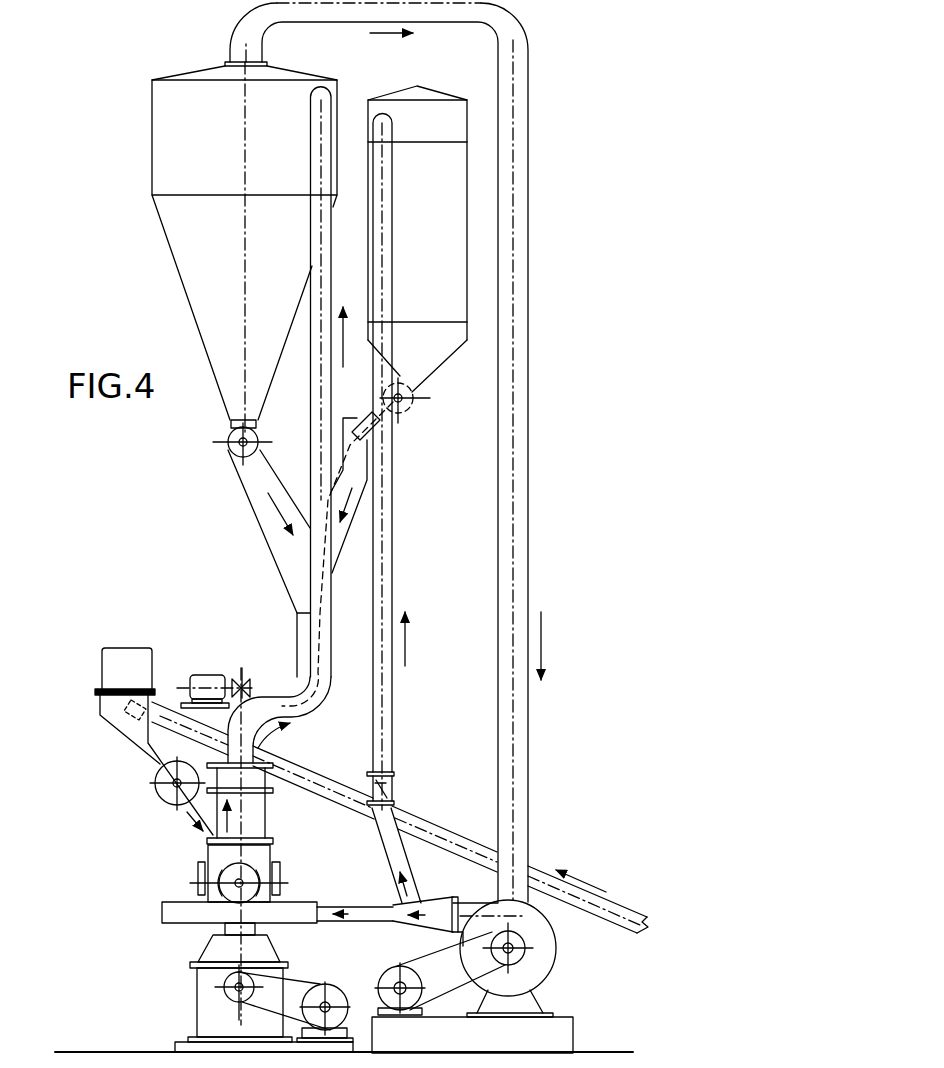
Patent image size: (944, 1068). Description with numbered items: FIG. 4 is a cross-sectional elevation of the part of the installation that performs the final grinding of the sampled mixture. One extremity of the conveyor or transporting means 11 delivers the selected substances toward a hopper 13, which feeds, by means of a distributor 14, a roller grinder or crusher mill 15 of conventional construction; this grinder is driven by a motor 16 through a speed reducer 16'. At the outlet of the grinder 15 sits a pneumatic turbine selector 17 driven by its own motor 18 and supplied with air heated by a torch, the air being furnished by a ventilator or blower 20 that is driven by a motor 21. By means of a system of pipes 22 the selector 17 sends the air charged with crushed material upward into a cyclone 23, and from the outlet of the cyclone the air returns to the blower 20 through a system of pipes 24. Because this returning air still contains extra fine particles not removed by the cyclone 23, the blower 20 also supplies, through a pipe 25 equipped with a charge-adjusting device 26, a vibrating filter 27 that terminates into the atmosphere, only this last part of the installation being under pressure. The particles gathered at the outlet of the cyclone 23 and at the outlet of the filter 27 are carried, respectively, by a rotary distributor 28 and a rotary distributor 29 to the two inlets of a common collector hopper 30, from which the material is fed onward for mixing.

The conveyor or transporting means 11 is at (625, 920).
The hopper 13 is at (118, 713).
The distributor 14 is at (167, 793).
The roller grinder or crusher mill 15 is at (203, 874).
The motor 16 is at (295, 989).
The speed reducer 16' is at (234, 987).
The pneumatic turbine selector 17 is at (247, 821).
The motor 18 is at (208, 675).
The ventilator or blower 20 is at (540, 948).
The motor 21 is at (380, 978).
The system of pipes 22 is at (308, 703).
The cyclone 23 is at (185, 240).
The system of pipes 24 is at (518, 323).
The pipe 25 is at (381, 587).
The charge-adjusting device 26 is at (388, 797).
The vibrating filter 27 is at (445, 202).
The rotary distributor 28 is at (228, 441).
The rotary distributor 29 is at (411, 408).
The common collector hopper 30 is at (270, 513).